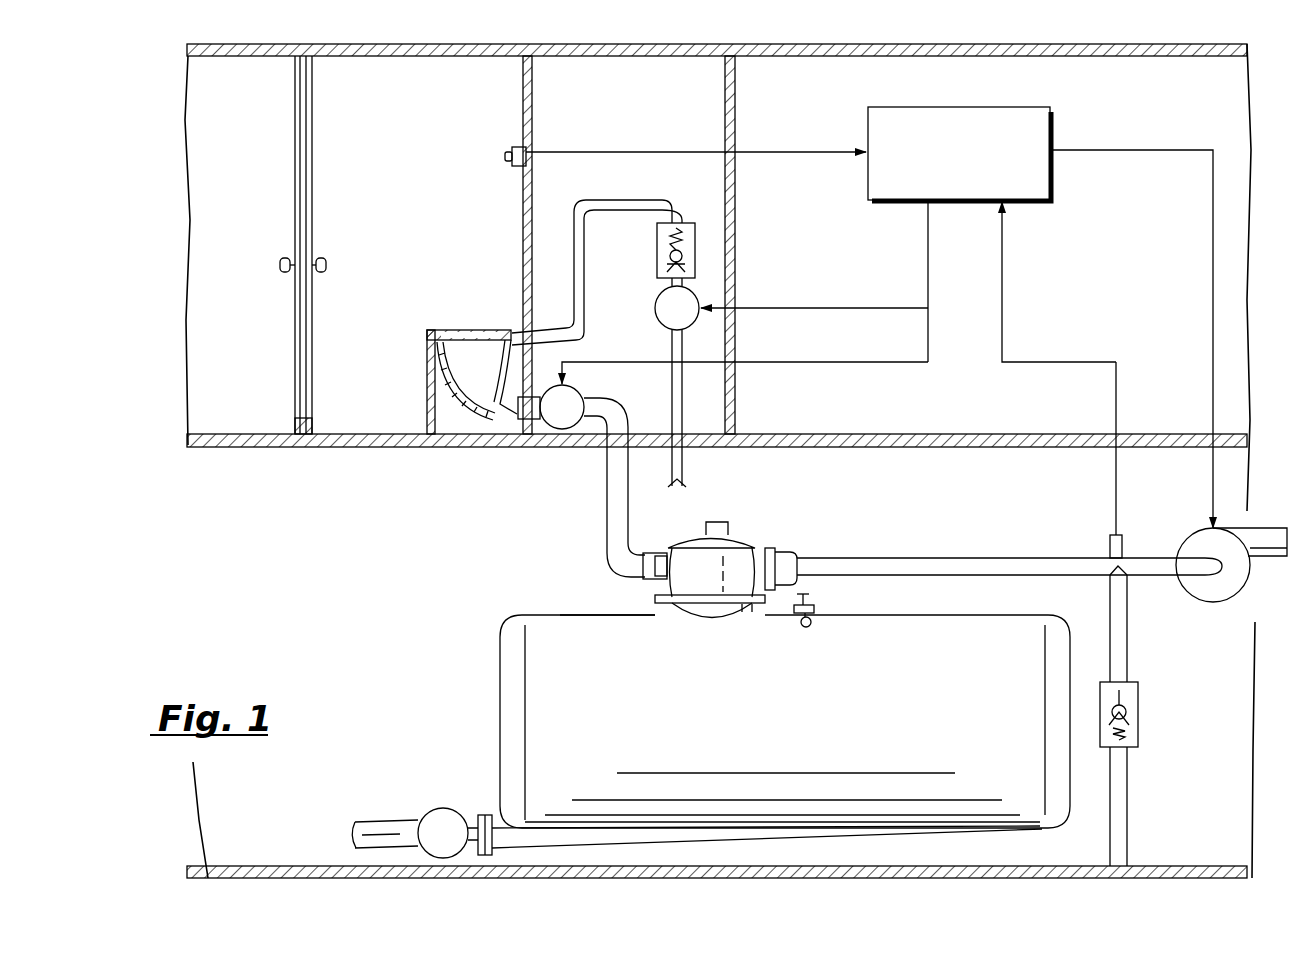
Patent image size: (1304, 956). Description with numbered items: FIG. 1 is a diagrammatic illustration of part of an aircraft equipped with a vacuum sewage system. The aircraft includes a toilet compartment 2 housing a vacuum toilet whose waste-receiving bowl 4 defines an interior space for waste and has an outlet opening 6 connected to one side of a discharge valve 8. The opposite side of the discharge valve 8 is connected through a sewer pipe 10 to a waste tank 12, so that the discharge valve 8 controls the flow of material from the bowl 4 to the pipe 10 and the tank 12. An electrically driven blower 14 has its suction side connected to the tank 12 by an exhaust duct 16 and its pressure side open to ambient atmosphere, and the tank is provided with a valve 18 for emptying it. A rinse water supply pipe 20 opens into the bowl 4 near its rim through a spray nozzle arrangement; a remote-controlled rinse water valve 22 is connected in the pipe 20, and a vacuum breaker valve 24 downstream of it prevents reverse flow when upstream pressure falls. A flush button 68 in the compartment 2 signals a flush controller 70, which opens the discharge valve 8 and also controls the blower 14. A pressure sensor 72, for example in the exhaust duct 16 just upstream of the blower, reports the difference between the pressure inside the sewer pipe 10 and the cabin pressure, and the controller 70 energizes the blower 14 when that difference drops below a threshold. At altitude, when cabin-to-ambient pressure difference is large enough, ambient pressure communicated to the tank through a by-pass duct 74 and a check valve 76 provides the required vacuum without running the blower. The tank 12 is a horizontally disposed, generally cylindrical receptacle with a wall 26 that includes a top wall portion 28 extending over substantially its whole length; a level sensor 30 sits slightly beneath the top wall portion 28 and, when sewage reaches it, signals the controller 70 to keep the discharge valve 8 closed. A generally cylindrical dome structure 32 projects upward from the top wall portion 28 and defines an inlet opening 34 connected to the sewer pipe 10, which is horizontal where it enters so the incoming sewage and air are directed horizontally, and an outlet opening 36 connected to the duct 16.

The toilet compartment 2 is at (394, 209).
The waste-receiving bowl 4 is at (452, 352).
The outlet connector 6 is at (527, 411).
The discharge valve 8 is at (566, 431).
The sewer pipe 10 is at (607, 499).
The waste tank 12 is at (497, 660).
The blower 14 is at (1221, 590).
The exhaust duct 16 is at (988, 560).
The valve 18 is at (440, 810).
The rinse water supply pipe 20 is at (686, 406).
The rinse water valve 22 is at (656, 306).
The vacuum breaker valve 24 is at (660, 248).
The wall 26 is at (1016, 776).
The top wall portion 28 is at (590, 612).
The level sensor 30 is at (812, 626).
The dome structure 32 is at (740, 532).
The inlet opening 34 is at (657, 586).
The outlet opening 36 is at (788, 552).
The flush button 68 is at (516, 147).
The flush controller 70 is at (1030, 113).
The pressure sensor 72 is at (1122, 552).
The by-pass duct 74 is at (1122, 822).
The check valve 76 is at (1128, 690).